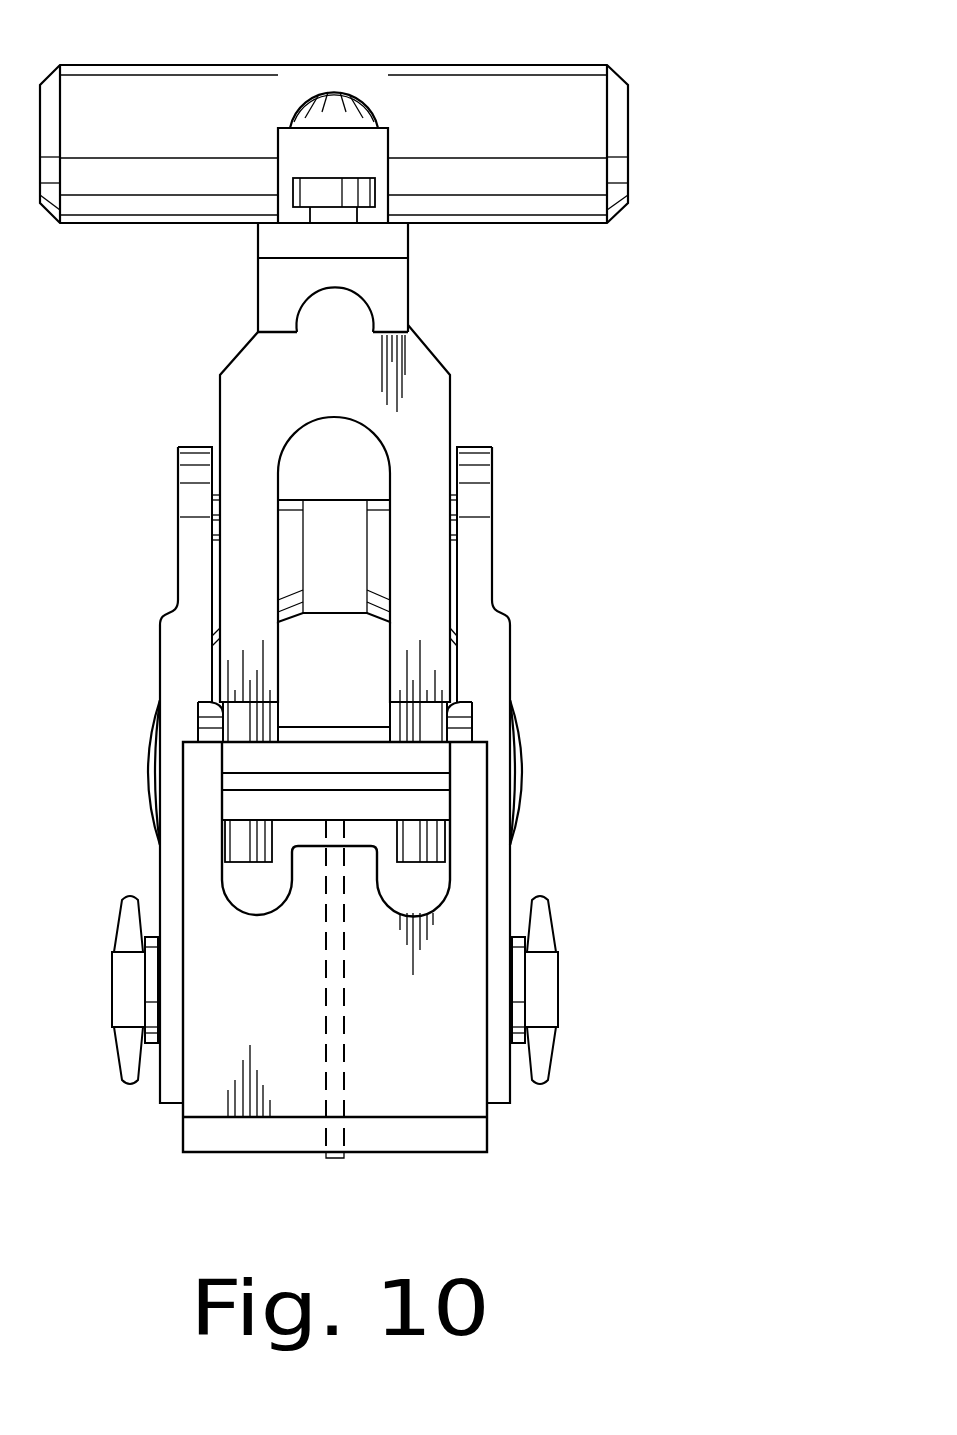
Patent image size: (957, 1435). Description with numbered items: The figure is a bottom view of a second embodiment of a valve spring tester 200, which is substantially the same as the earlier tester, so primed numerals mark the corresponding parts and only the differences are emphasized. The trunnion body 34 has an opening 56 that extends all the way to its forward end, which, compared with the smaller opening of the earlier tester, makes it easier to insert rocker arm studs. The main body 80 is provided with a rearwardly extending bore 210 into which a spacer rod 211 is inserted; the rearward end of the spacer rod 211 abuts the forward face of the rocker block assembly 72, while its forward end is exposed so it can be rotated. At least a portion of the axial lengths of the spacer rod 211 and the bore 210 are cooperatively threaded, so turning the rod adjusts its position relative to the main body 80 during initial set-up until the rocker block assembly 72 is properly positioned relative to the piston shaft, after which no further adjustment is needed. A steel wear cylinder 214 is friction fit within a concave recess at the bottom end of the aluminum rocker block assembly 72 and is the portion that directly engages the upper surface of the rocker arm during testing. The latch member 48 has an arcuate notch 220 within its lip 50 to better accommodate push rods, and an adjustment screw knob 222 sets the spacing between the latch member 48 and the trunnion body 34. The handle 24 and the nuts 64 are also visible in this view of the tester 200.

The valve spring tester 200 is at (722, 305).
The handle 24 is at (513, 85).
The adjustment screw knob 222 is at (317, 192).
The latch member 48 is at (322, 317).
The lip 50 is at (282, 300).
The arcuate notch 220 is at (336, 322).
The trunnion body 34 is at (390, 513).
The opening 56 is at (390, 518).
The nut 64 is at (233, 715).
The rocker block assembly 72 is at (345, 981).
The wear cylinder 214 is at (443, 783).
The spacer rod 211 is at (335, 829).
The bore 210 is at (325, 996).
The main body 80 is at (428, 1093).